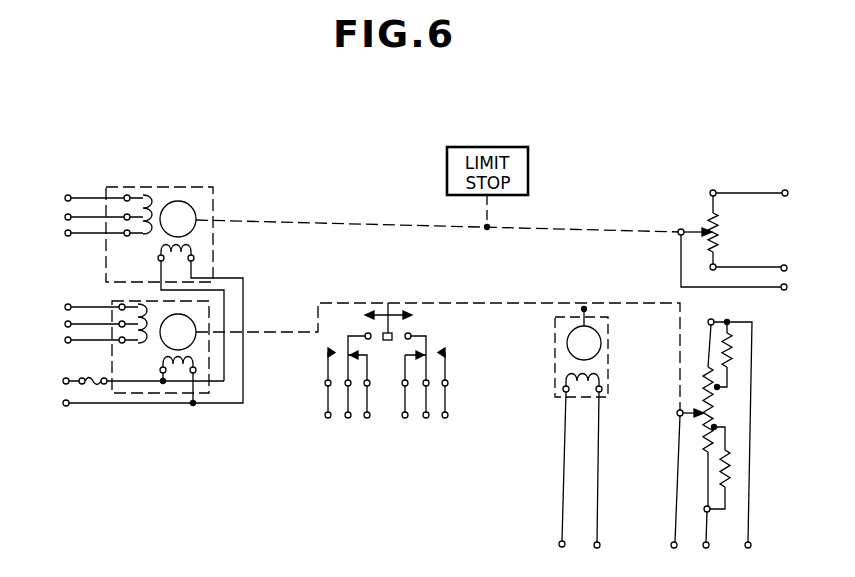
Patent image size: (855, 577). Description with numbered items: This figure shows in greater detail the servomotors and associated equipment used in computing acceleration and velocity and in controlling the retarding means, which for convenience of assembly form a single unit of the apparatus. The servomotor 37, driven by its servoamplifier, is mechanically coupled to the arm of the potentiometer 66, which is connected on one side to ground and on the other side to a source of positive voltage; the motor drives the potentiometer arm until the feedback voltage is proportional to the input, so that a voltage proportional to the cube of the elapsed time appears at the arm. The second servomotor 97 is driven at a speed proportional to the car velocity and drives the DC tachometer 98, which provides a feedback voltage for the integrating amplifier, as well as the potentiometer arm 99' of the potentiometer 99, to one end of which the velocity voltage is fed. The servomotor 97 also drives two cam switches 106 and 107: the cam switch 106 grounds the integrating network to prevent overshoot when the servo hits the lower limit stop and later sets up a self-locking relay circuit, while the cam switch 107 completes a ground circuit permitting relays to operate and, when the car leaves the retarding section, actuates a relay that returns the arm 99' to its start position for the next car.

The servomotor 37 is at (192, 187).
The servomotor 97 is at (140, 377).
The potentiometer 66 is at (718, 220).
The DC tachometer 98 is at (575, 338).
The potentiometer 99 is at (696, 433).
The potentiometer arm 99' is at (672, 467).
The cam switch 107 is at (347, 429).
The cam switch 106 is at (425, 429).